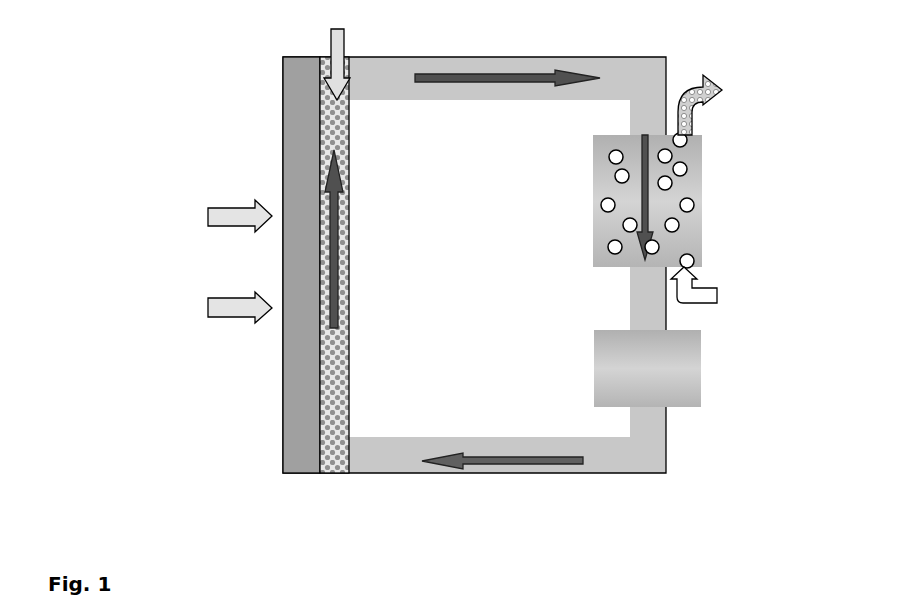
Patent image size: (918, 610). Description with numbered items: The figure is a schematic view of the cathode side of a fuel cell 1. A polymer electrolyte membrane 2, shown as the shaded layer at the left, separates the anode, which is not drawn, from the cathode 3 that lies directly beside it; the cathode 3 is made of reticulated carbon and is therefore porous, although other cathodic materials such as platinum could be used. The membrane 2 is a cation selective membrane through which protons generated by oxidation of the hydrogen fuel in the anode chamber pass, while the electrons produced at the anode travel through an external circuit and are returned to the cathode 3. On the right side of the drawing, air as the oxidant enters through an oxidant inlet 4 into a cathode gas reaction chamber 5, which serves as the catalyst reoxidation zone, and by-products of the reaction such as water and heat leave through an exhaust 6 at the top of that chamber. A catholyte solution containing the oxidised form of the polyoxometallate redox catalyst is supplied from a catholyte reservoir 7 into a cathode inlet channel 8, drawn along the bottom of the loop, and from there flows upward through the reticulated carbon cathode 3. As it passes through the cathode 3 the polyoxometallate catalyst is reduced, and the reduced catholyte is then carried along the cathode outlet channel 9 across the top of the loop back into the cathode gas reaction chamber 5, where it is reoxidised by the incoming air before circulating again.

The fuel cell 1 is at (64, 313).
The polymer electrolyte membrane 2 is at (306, 416).
The cathode 3 is at (341, 460).
The oxidant inlet 4 is at (706, 292).
The cathode gas reaction chamber 5 is at (682, 190).
The exhaust 6 is at (710, 104).
The catholyte reservoir 7 is at (800, 391).
The cathode inlet channel 8 is at (584, 474).
The cathode outlet channel 9 is at (480, 81).